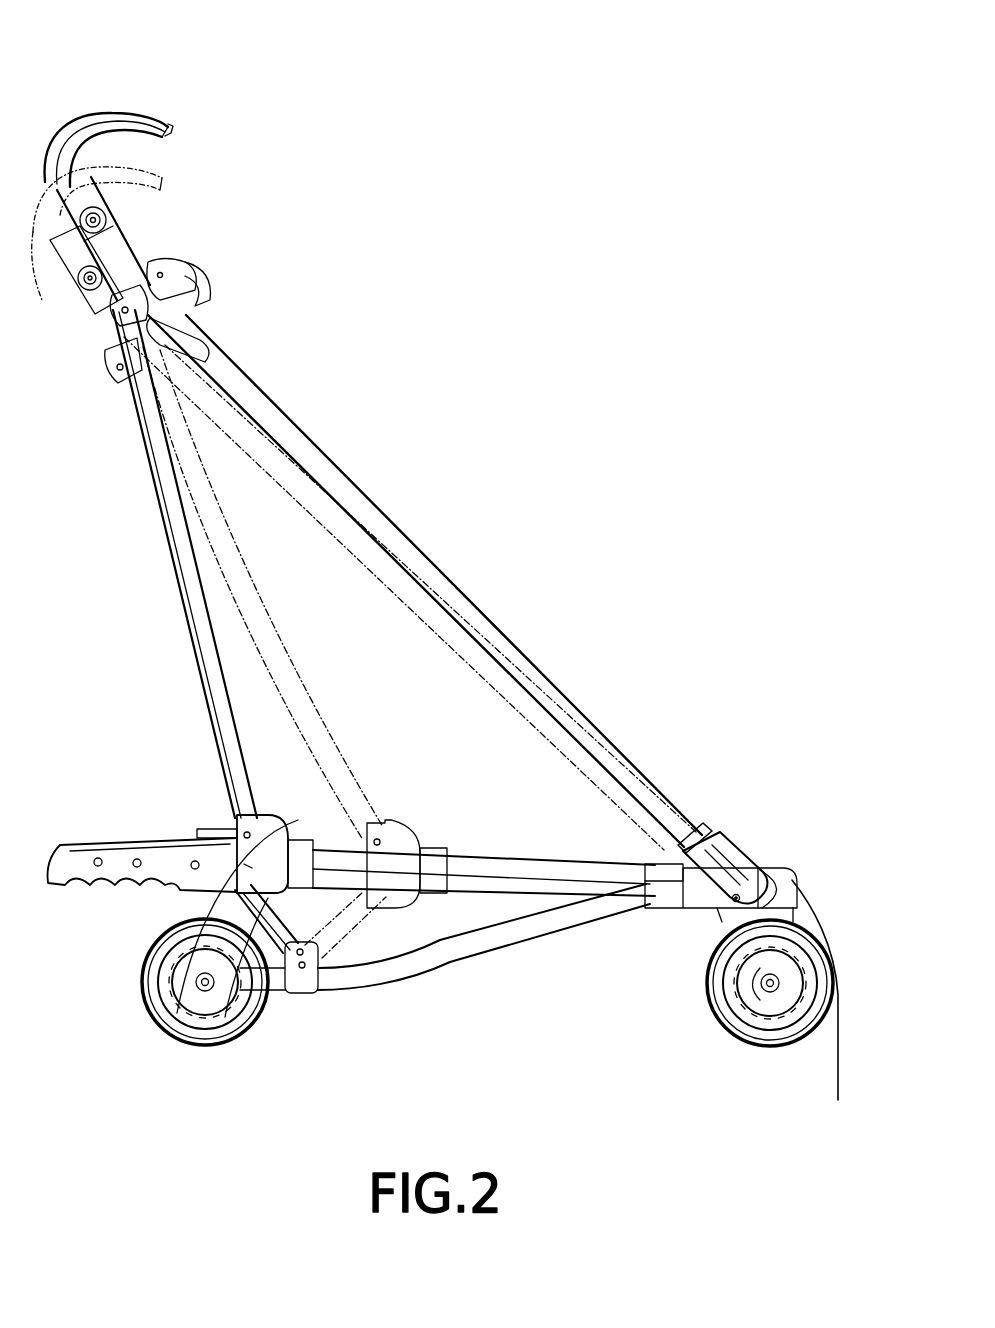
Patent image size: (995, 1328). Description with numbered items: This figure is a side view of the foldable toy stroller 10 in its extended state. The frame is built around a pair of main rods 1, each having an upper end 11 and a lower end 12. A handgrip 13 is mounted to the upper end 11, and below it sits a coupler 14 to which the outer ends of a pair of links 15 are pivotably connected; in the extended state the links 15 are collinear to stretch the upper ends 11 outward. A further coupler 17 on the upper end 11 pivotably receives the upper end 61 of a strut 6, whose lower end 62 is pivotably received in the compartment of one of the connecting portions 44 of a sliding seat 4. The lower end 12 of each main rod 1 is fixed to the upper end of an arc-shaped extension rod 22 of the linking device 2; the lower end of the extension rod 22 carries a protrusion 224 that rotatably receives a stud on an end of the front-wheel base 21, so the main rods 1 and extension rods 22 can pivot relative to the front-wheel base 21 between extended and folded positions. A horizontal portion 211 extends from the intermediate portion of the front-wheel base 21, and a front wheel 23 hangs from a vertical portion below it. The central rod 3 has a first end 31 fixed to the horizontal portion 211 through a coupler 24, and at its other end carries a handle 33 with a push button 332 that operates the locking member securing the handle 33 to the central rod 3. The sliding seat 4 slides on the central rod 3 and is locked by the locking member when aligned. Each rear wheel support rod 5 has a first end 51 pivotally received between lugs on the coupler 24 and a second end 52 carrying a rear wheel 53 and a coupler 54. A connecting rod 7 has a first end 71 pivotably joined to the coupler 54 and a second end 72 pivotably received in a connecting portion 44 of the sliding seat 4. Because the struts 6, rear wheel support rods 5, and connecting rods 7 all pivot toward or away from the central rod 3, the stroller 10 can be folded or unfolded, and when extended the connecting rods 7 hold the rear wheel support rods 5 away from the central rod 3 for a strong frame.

The main rod 1 is at (283, 424).
The linking device 2 is at (778, 845).
The central rod 3 is at (520, 876).
The sliding seat 4 is at (236, 870).
The rear wheel support rod 5 is at (395, 976).
The strut 6 is at (174, 567).
The connecting rod 7 is at (243, 946).
The foldable toy stroller 10 is at (475, 526).
The upper end of main rod 11 is at (130, 250).
The lower end of main rod 12 is at (688, 824).
The handgrip 13 is at (94, 126).
The coupler 14 is at (186, 268).
The link 15 is at (200, 291).
The coupler 17 is at (112, 310).
The front-wheel base 21 is at (823, 1004).
The extension rod 22 is at (714, 856).
The front wheel 23 is at (771, 1034).
The coupler 24 is at (683, 880).
The first end of central rod 31 is at (637, 864).
The handle 33 is at (100, 845).
The connecting portion 44 is at (284, 840).
The first end of rear wheel support rod 51 is at (660, 886).
The second end of rear wheel support rod 52 is at (278, 982).
The rear wheel 53 is at (160, 1008).
The coupler 54 is at (318, 993).
The upper end of strut 61 is at (118, 345).
The lower end of strut 62 is at (252, 815).
The first end of connecting rod 71 is at (278, 944).
The second end of connecting rod 72 is at (332, 840).
The horizontal portion 211 is at (711, 895).
The protrusion 224 is at (752, 880).
The push button 332 is at (200, 829).